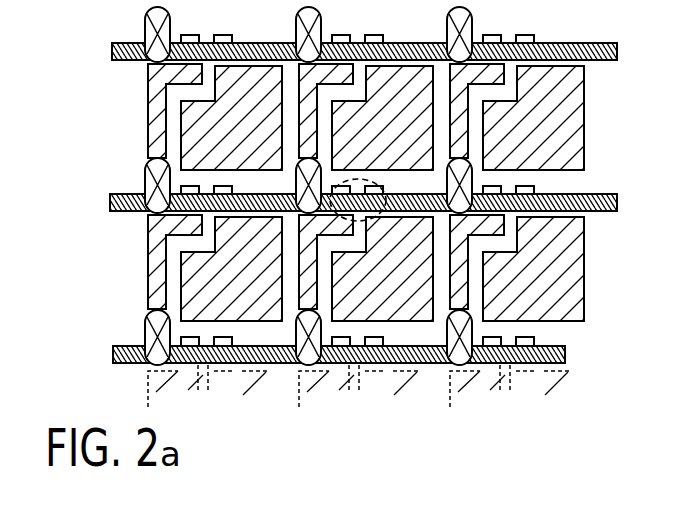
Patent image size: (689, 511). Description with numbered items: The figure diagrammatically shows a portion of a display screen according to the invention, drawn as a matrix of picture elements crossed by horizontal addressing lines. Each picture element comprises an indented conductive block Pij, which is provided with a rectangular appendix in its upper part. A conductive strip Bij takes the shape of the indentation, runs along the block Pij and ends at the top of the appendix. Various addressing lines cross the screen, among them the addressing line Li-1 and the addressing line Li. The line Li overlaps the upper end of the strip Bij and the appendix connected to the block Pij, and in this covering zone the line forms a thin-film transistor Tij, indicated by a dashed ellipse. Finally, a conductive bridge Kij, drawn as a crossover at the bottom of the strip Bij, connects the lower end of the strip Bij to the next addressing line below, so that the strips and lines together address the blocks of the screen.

The addressing line Li-1 is at (113, 44).
The addressing line Li is at (110, 196).
The thin-film transistor Tij is at (362, 176).
The conductive strip Bij is at (313, 227).
The conductive bridge Kij is at (296, 345).
The indented conductive block Pij is at (385, 298).